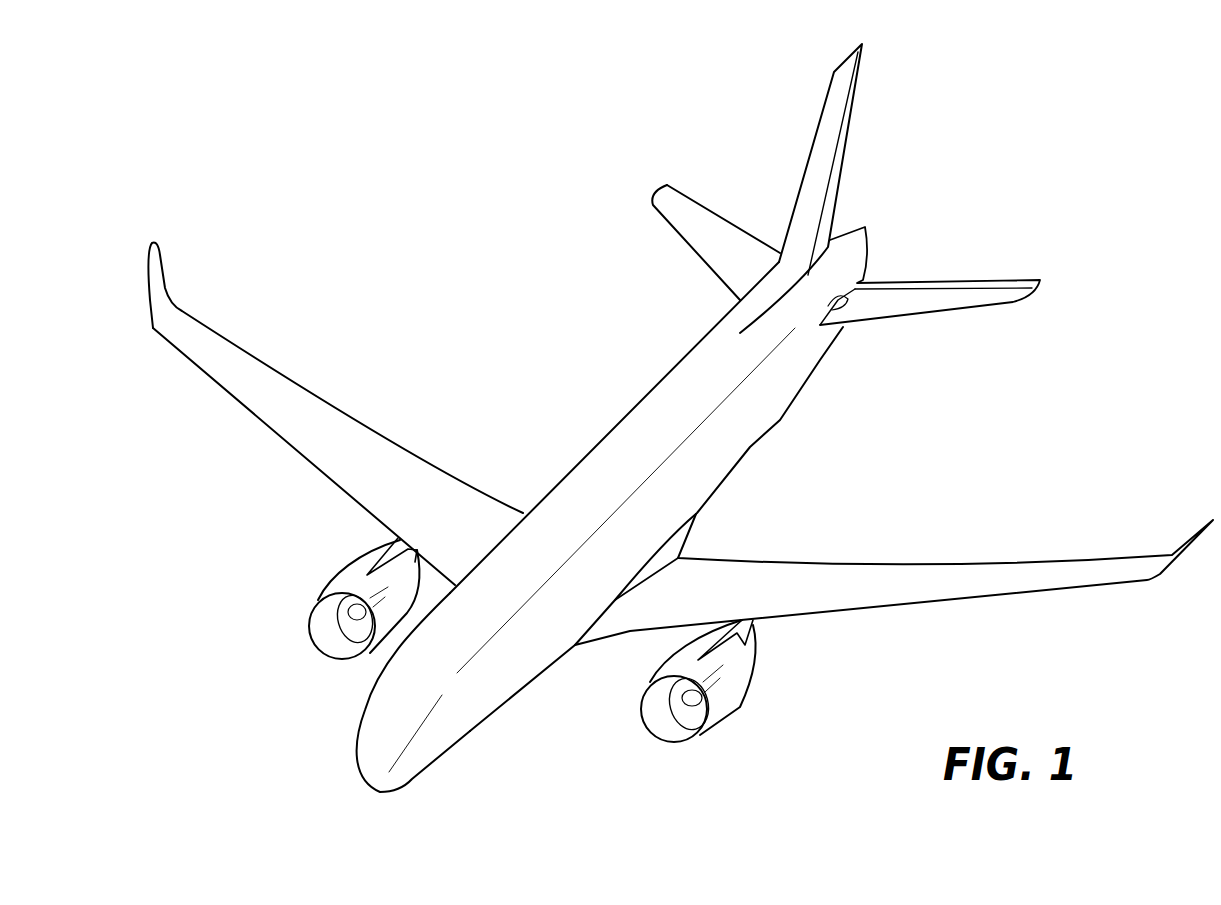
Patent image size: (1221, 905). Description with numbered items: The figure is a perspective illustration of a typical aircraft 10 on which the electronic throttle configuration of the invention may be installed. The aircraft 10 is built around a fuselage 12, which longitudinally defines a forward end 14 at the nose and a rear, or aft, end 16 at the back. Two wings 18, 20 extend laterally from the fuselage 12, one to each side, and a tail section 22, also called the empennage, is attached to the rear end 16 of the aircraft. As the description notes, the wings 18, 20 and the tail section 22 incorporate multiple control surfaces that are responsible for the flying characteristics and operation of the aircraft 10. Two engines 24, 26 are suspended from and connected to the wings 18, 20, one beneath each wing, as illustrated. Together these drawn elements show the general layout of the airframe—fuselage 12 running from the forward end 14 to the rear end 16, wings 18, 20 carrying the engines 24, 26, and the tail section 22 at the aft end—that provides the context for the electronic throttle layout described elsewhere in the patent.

The aircraft 10 is at (1138, 315).
The fuselage 12 is at (752, 440).
The forward end 14 is at (357, 782).
The rear end 16 is at (867, 227).
The wing 18 is at (868, 575).
The wing 20 is at (362, 435).
The tail section 22 is at (830, 178).
The engine 24 is at (732, 688).
The engine 26 is at (348, 586).